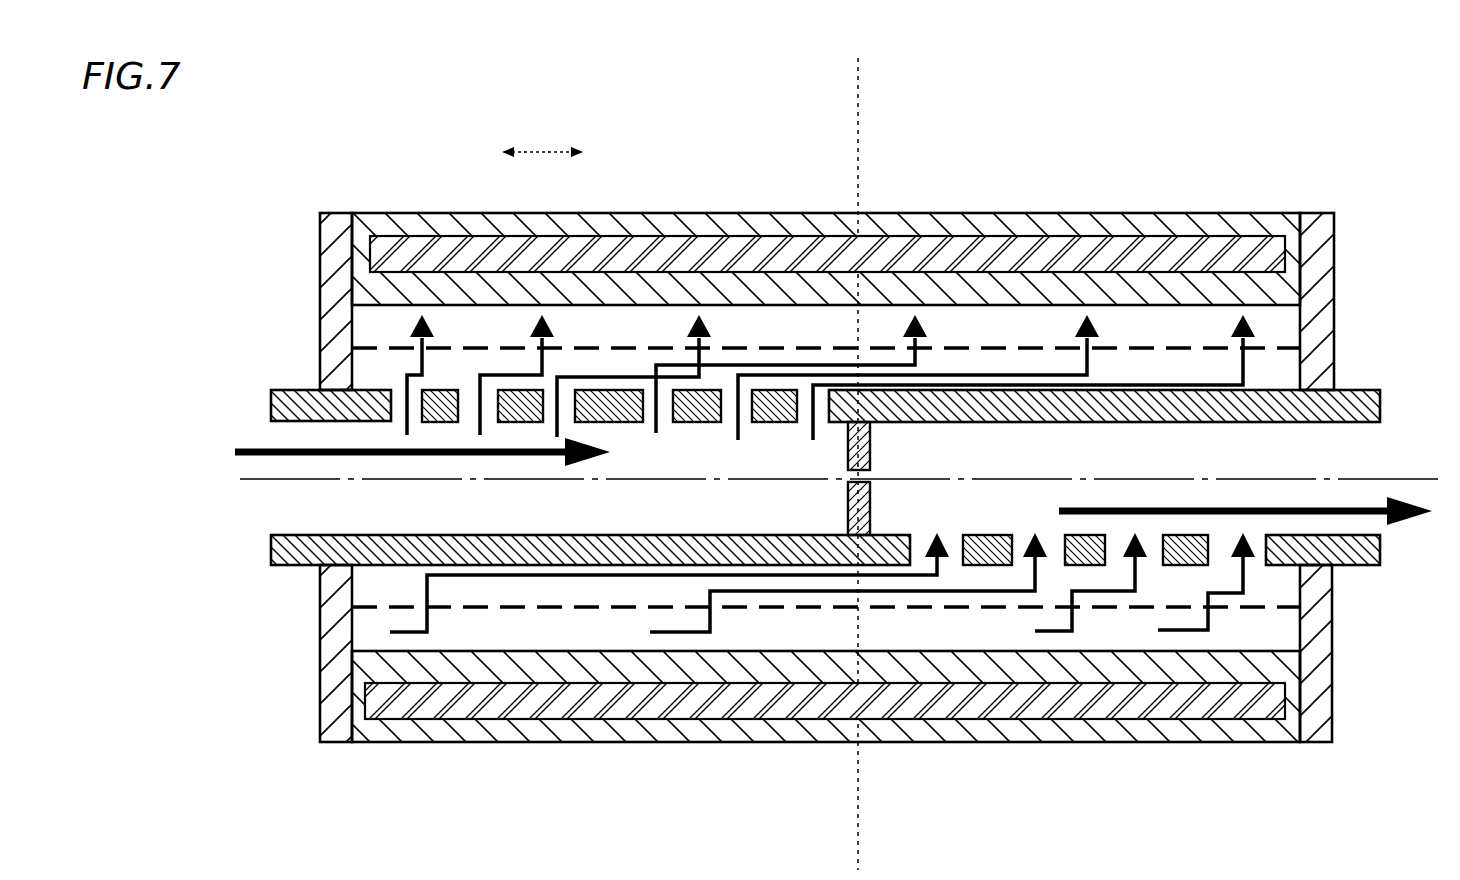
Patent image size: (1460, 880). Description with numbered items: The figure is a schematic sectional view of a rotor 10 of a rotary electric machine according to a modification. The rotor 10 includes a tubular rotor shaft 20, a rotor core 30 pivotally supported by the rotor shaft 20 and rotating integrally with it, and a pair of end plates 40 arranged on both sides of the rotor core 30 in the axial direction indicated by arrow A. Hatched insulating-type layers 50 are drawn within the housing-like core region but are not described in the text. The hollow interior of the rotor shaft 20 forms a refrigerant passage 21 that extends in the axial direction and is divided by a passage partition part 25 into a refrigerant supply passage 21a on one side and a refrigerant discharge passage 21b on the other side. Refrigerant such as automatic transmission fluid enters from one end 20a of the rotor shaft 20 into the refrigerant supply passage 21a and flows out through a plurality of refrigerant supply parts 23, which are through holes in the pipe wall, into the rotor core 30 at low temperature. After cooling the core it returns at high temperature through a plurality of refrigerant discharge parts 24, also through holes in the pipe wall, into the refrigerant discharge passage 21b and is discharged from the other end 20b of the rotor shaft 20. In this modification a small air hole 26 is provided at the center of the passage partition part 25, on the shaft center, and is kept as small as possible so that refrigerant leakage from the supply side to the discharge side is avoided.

The rotor of rotary electric machine 10 is at (1050, 98).
The end plate 40 is at (338, 212).
The rotor core 30 is at (932, 211).
The heat insulating material 50 is at (1124, 240).
The rotor shaft 20 is at (1354, 386).
The refrigerant supply part 23 is at (472, 400).
The refrigerant passage 21 is at (290, 505).
The refrigerant supply passage 21a is at (615, 522).
The refrigerant discharge passage 21b is at (1172, 464).
The passage partition part 25 is at (872, 456).
The air hole 26 is at (872, 490).
The one end of rotor shaft 20a is at (270, 549).
The another end of rotor shaft 20b is at (1383, 548).
The refrigerant discharge part 24 is at (1150, 562).
The axial direction A is at (541, 150).